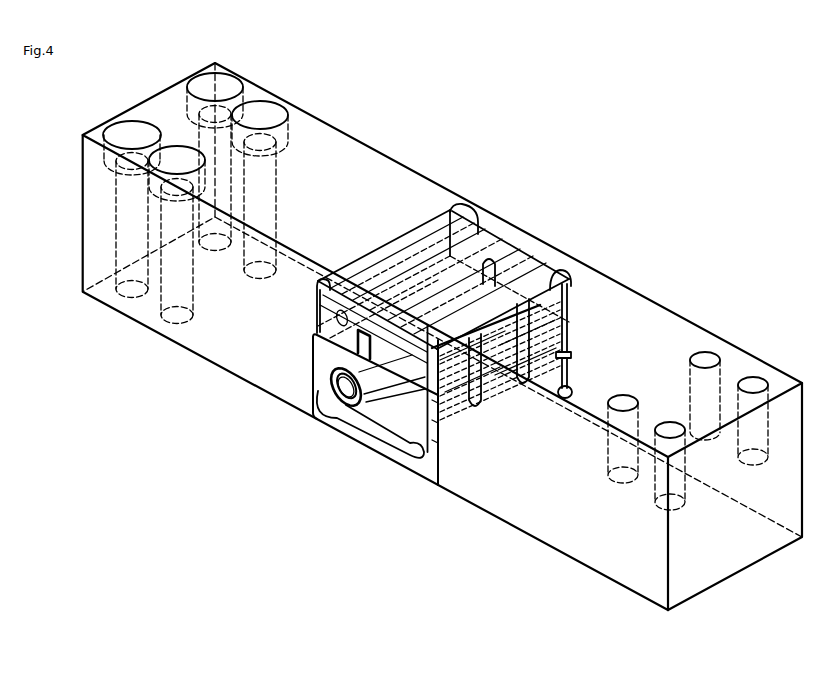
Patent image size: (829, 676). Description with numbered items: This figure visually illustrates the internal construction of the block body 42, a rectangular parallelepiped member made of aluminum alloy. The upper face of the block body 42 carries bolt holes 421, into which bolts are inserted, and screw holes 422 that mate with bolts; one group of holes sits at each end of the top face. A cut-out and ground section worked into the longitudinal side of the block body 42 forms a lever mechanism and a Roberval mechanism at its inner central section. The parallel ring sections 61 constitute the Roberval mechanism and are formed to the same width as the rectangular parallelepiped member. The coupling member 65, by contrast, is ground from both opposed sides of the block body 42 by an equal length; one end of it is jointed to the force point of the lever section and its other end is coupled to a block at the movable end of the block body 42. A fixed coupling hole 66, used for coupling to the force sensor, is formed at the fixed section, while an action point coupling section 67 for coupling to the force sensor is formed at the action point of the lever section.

The block body 42 is at (535, 155).
The bolt holes 421 is at (243, 78).
The screw holes 422 is at (713, 352).
The coupling member 65 is at (565, 335).
The action point coupling section 67 is at (317, 304).
The fixed coupling hole 66 is at (368, 422).
The parallel ring sections 61 is at (375, 440).